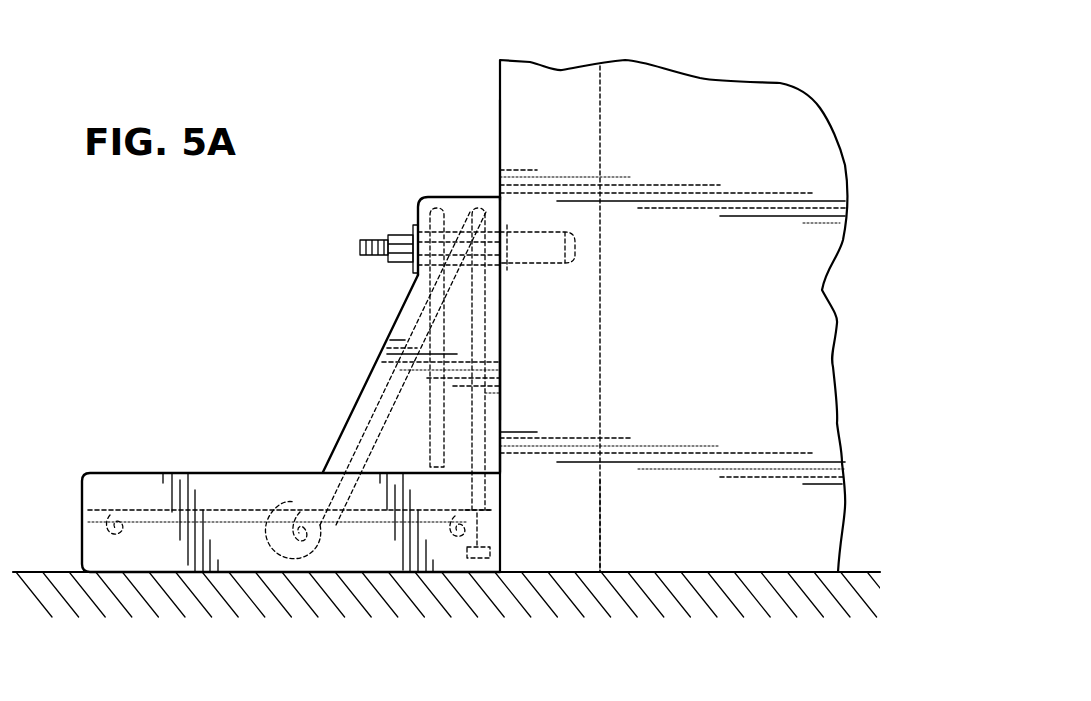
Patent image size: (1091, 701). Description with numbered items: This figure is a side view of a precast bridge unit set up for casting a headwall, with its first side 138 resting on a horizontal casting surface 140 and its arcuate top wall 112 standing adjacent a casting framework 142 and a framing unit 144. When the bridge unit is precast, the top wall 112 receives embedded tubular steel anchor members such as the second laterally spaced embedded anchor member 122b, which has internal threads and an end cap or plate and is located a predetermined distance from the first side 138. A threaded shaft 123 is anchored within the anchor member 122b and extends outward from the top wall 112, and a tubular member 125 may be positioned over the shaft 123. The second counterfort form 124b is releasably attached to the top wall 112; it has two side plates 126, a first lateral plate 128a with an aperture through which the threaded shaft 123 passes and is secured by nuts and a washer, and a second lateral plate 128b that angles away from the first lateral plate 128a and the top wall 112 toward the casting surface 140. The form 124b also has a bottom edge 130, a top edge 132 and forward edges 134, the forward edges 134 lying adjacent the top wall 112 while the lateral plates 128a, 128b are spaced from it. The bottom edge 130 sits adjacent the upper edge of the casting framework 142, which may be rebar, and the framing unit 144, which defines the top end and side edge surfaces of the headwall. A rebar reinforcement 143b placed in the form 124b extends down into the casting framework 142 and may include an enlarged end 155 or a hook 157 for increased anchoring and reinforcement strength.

The arcuate top wall 112 is at (574, 80).
The second laterally spaced embedded anchor member 122b is at (537, 232).
The threaded shaft 123 is at (375, 240).
The second counterfort form 124b is at (337, 445).
The tubular member 125 is at (457, 240).
The side plate 126 is at (400, 412).
The first lateral plate 128a is at (417, 210).
The second lateral plate 128b is at (395, 332).
The bottom edge 130 is at (455, 473).
The top edge 132 is at (477, 197).
The forward edge 134 is at (503, 362).
The first side 138 is at (700, 572).
The horizontal casting surface 140 is at (615, 572).
The casting framework 142 is at (108, 520).
The rebar reinforcement 143b is at (468, 403).
The framing unit 144 is at (97, 471).
The enlarged end 155 is at (472, 560).
The hook 157 is at (292, 560).